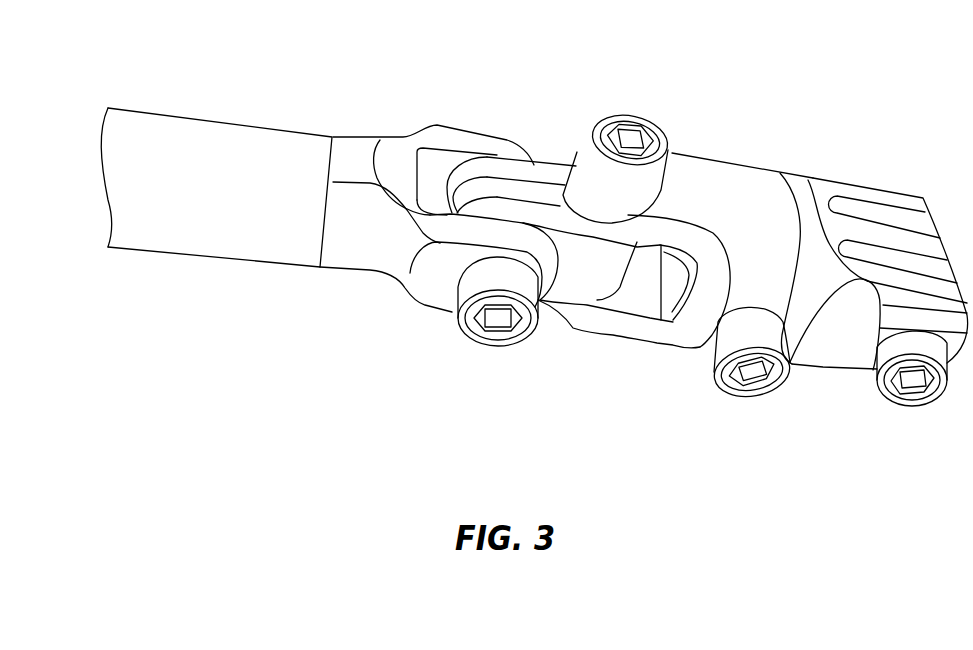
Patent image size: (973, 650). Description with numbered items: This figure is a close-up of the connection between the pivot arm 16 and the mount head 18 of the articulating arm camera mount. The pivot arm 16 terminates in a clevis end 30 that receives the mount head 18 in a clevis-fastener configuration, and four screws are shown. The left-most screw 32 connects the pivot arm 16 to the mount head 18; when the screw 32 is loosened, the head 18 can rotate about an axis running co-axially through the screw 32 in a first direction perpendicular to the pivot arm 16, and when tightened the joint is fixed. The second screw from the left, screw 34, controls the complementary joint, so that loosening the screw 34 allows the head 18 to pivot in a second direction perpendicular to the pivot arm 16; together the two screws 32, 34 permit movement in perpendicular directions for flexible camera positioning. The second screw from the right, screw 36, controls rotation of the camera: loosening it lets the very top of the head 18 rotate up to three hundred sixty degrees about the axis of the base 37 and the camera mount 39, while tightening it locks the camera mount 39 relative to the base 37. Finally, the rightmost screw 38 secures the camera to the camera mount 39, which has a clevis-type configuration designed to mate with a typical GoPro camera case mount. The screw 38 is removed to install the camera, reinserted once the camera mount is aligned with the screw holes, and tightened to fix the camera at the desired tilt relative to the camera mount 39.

The pivot arm 16 is at (198, 137).
The mount head 18 is at (800, 190).
The clevis end 30 is at (355, 155).
The screw 32 is at (500, 312).
The screw 34 is at (635, 133).
The screw 36 is at (752, 395).
The base 37 is at (747, 188).
The screw 38 is at (913, 390).
The camera mount 39 is at (830, 348).